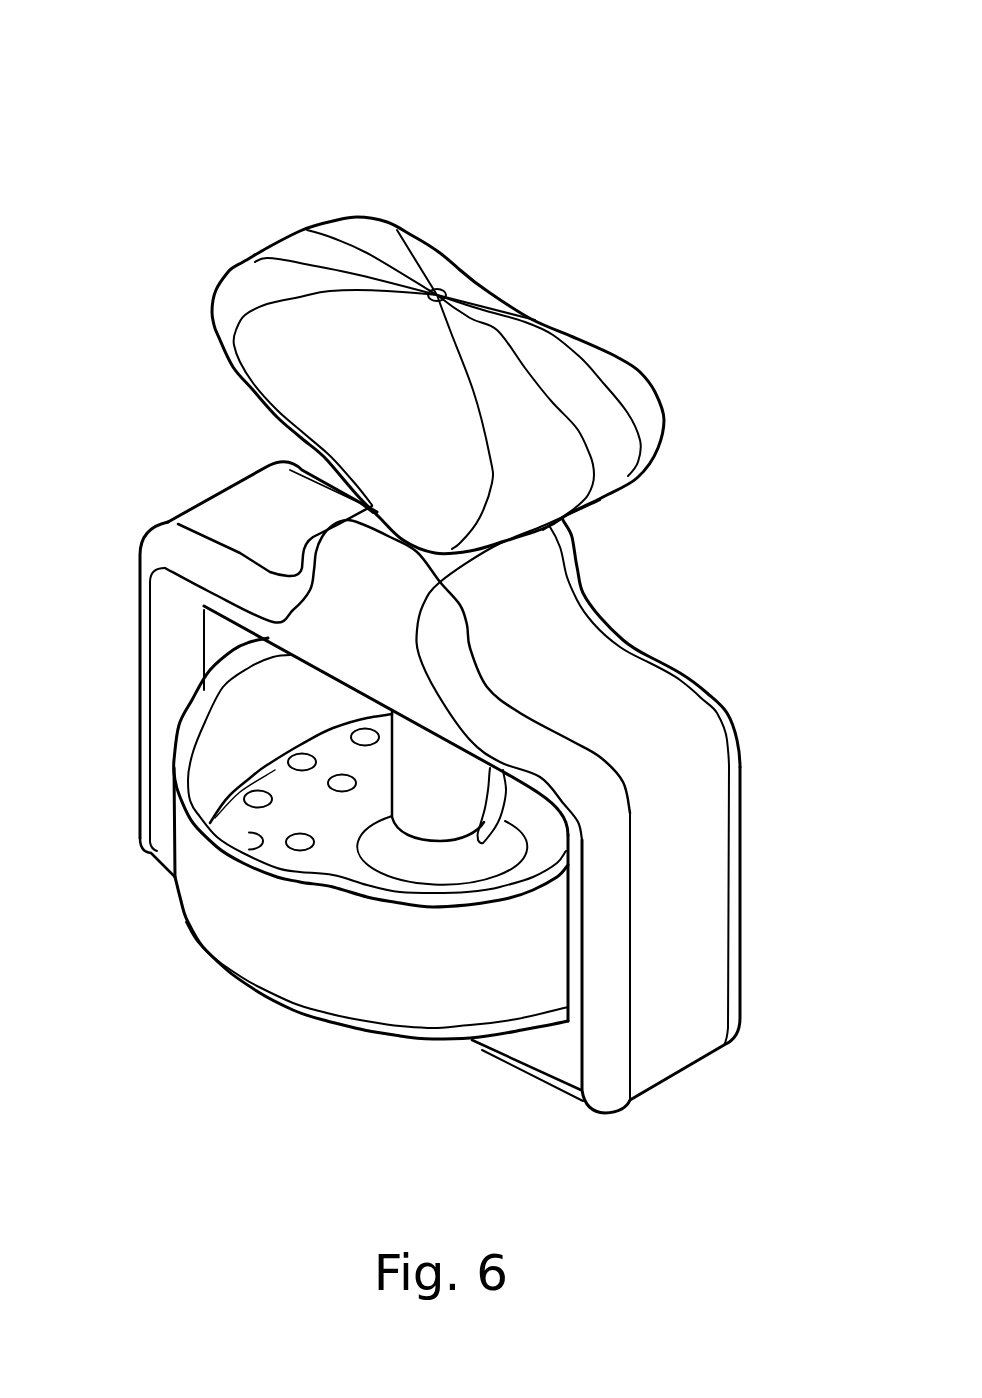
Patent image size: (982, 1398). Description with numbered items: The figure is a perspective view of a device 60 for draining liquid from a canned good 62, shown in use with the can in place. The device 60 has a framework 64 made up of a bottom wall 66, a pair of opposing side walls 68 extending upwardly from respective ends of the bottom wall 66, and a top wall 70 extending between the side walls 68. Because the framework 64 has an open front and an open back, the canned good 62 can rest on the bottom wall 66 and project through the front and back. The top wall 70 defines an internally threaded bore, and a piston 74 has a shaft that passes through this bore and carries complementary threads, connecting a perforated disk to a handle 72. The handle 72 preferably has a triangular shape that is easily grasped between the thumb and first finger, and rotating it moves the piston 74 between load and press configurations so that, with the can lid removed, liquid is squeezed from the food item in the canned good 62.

The device 60 is at (605, 112).
The canned good 62 is at (298, 990).
The framework 64 is at (680, 637).
The bottom wall 66 is at (542, 1057).
The side walls 68 is at (140, 628).
The top wall 70 is at (233, 490).
The handle 72 is at (381, 389).
The piston 74 is at (415, 863).